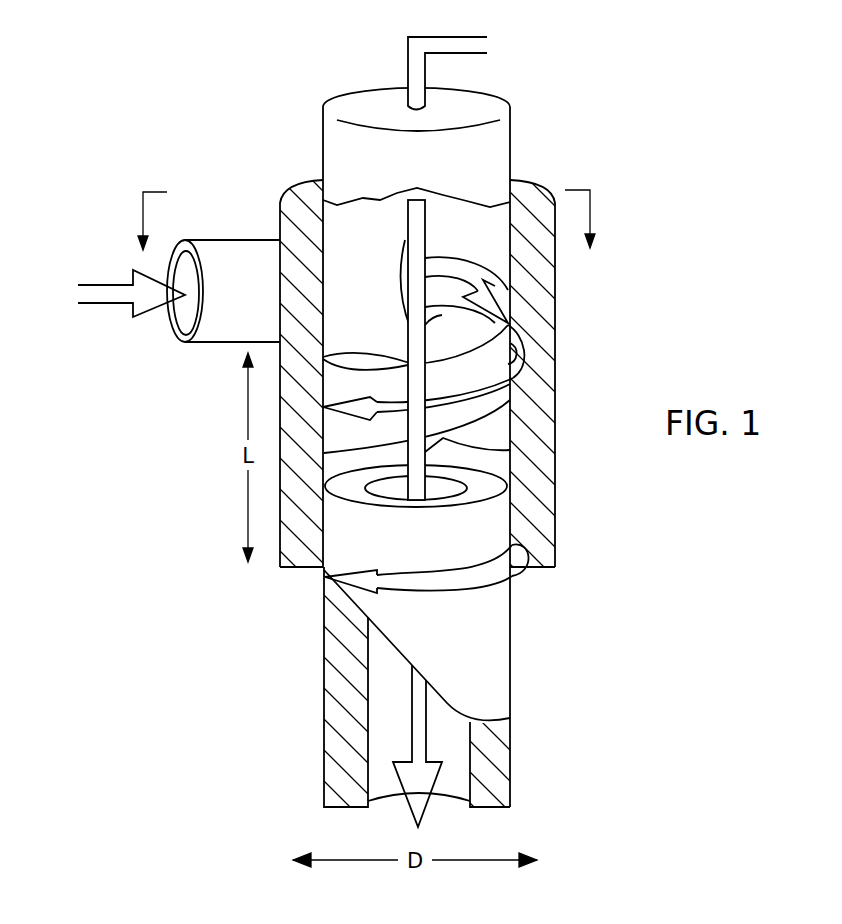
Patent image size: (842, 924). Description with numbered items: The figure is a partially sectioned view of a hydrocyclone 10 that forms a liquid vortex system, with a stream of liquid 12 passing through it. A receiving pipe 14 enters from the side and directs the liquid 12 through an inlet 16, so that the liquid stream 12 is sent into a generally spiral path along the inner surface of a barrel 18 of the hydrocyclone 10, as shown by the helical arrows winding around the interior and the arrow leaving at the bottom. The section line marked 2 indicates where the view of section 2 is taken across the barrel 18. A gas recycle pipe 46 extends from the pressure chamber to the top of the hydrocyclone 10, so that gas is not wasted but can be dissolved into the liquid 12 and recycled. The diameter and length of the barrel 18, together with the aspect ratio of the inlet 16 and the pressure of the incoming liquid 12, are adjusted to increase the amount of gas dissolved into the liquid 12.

The hydrocyclone 10 is at (242, 202).
The liquid 12 is at (117, 303).
The receiving pipe 14 is at (217, 335).
The inlet 16 is at (408, 257).
The barrel 18 is at (282, 568).
The gas recycle pipe 46 is at (457, 53).
The section line 2- 2 is at (366, 220).